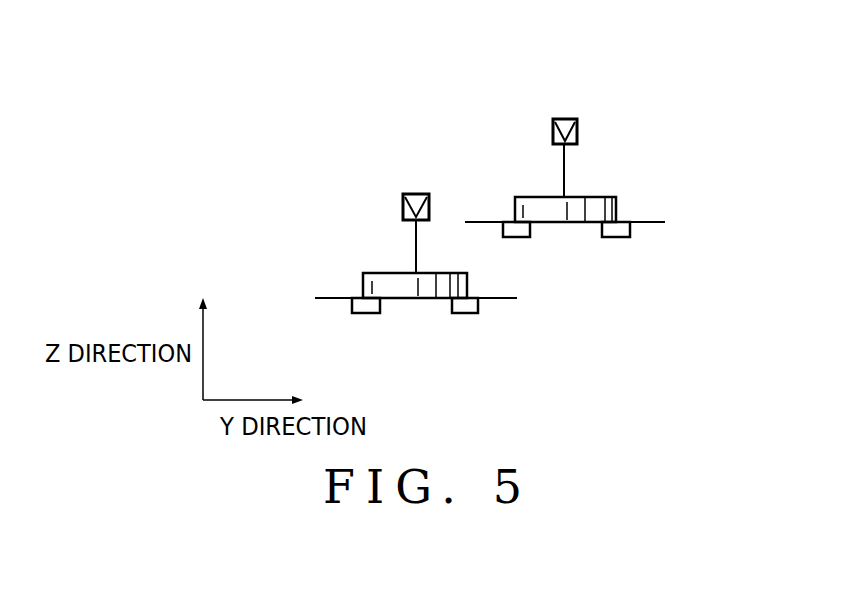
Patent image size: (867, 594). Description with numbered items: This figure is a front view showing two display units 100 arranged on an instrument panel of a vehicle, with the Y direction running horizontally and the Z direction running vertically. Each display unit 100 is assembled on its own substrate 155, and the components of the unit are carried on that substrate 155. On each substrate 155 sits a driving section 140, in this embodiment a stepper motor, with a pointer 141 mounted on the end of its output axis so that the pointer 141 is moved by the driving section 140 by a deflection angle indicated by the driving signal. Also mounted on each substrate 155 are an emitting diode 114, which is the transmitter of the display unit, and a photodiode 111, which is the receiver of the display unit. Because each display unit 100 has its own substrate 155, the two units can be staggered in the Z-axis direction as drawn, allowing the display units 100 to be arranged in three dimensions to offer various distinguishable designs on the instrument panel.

The display unit 100 is at (445, 204).
The pointer 141 is at (415, 193).
The driving section 140 is at (392, 273).
The substrate 155 is at (340, 298).
The emitting diode 114 is at (373, 313).
The photodiode 111 is at (465, 313).